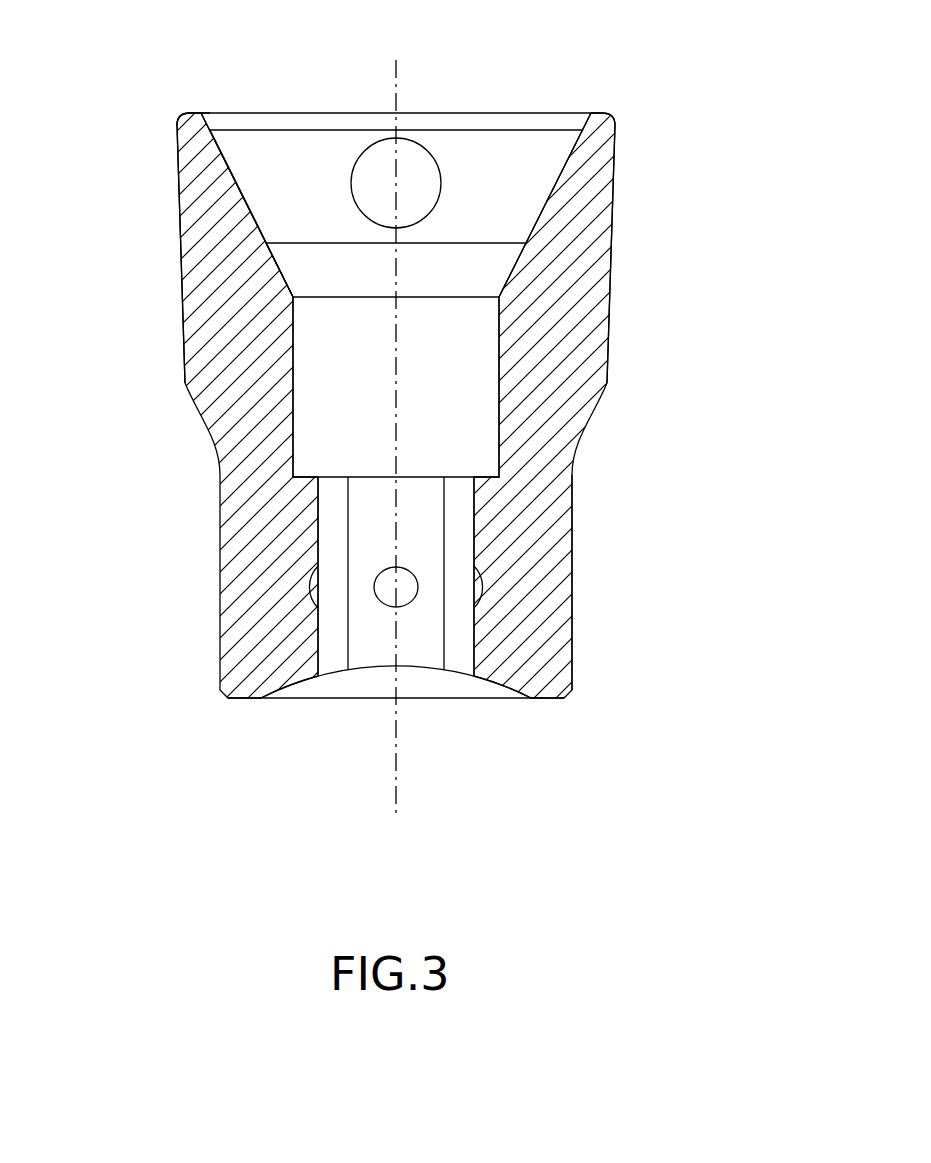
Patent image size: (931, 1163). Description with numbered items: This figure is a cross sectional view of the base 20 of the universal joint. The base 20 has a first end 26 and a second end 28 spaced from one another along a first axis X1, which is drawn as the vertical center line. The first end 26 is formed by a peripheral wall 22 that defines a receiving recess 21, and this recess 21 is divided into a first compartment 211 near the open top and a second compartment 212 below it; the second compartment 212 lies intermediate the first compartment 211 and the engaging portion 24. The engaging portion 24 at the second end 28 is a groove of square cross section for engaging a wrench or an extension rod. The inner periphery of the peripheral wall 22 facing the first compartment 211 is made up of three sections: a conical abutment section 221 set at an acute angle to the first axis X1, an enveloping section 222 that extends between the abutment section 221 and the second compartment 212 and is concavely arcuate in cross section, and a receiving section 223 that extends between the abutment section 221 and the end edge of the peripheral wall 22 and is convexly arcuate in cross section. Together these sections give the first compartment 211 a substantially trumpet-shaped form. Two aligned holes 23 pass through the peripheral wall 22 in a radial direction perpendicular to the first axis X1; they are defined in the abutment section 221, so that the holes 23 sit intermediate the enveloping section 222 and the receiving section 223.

The base 20 is at (192, 677).
The receiving recess 21 is at (517, 295).
The first compartment 211 is at (525, 210).
The second compartment 212 is at (450, 352).
The peripheral wall 22 is at (182, 283).
The conical abutment section 221 is at (238, 197).
The enveloping section 222 is at (265, 272).
The receiving section 223 is at (197, 118).
The holes 23 is at (378, 192).
The engaging portion 24 is at (330, 628).
The first end 26 is at (525, 157).
The second end 28 is at (550, 628).
The first axis X1 is at (390, 795).